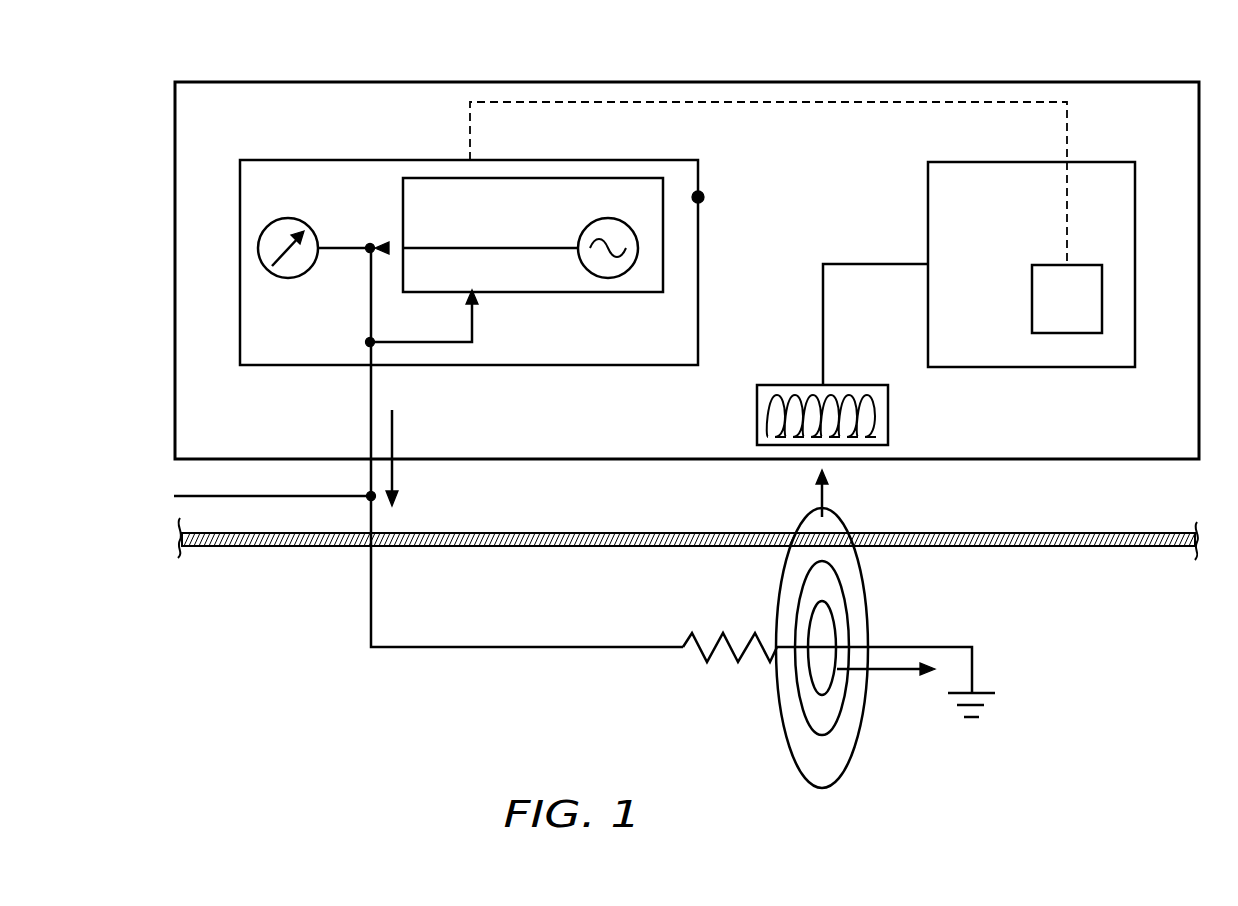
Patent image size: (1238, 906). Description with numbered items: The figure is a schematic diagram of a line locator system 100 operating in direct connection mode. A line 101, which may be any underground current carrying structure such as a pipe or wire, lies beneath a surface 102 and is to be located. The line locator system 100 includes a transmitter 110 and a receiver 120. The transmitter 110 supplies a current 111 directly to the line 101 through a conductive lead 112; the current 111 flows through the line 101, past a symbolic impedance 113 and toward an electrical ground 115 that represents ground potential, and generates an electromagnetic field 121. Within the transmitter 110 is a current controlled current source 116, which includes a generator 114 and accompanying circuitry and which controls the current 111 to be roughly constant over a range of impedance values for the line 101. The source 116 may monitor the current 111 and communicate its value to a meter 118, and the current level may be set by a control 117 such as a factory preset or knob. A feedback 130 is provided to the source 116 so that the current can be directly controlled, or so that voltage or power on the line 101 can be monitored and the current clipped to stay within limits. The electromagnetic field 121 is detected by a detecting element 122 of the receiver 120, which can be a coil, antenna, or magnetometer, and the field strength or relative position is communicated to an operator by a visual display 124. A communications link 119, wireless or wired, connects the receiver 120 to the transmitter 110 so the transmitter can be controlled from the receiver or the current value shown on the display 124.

The line locator system 100 is at (741, 261).
The line 101 is at (453, 648).
The surface 102 is at (555, 532).
The transmitter 110 is at (272, 160).
The current 111 is at (392, 435).
The conductive lead 112 is at (371, 470).
The impedance 113 is at (707, 660).
The generator 114 is at (585, 230).
The electrical ground 115 is at (988, 705).
The current controlled current source 116 is at (403, 208).
The control 117 is at (704, 196).
The meter 118 is at (287, 279).
The communications link 119 is at (813, 102).
The receiver 120 is at (1102, 162).
The electromagnetic field 121 is at (843, 523).
The detecting element 122 is at (888, 415).
The visual display 124 is at (1065, 333).
The feedback 130 is at (472, 313).